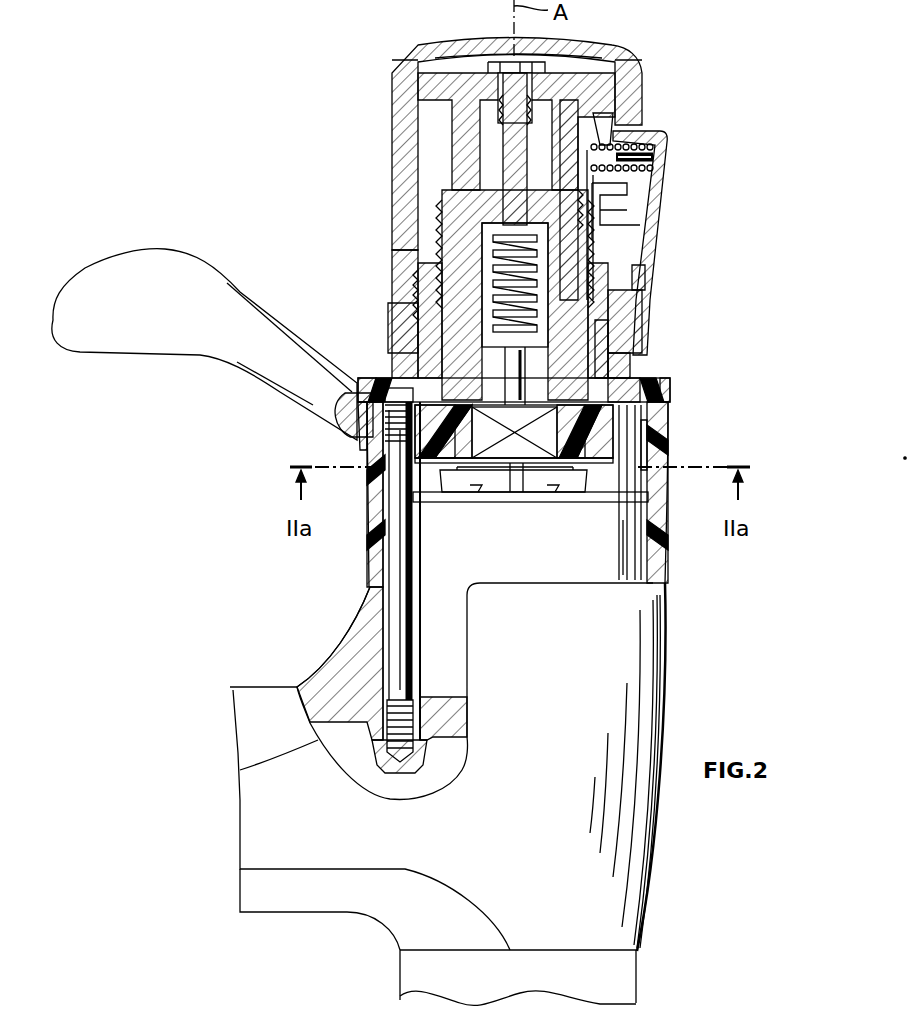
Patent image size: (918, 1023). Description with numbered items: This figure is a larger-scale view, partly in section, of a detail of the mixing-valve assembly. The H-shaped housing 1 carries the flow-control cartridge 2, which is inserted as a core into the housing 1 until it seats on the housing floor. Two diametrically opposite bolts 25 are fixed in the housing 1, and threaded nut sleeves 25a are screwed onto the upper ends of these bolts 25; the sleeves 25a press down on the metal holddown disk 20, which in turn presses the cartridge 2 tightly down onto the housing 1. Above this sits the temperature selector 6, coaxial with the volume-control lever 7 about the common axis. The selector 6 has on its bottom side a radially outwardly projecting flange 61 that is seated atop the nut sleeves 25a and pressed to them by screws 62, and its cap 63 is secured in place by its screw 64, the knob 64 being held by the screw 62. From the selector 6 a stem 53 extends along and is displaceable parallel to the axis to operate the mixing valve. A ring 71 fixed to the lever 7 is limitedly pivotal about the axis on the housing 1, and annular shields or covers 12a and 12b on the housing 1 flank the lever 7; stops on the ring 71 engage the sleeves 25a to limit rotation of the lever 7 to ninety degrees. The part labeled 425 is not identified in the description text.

The housing 1 is at (620, 862).
The flow-control cartridge 2 is at (623, 577).
The temperature selector 6 is at (676, 121).
The volume-control lever 7 is at (72, 312).
The annular shield 12a is at (667, 450).
The annular shield 12b is at (605, 390).
The disk 20 is at (660, 560).
The bolt 25 is at (393, 627).
The threaded nut sleeve 25a is at (360, 453).
The stem 53 is at (613, 367).
The flange 61 is at (388, 378).
The screw 62 is at (360, 378).
The cap 63 is at (392, 250).
The knob 64 is at (532, 103).
The ring 71 is at (600, 440).
The rocker arm 425 is at (647, 323).